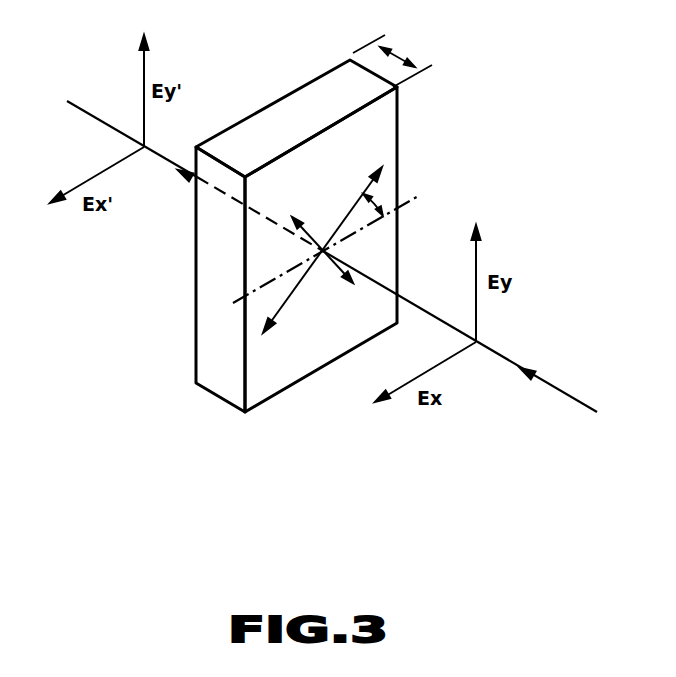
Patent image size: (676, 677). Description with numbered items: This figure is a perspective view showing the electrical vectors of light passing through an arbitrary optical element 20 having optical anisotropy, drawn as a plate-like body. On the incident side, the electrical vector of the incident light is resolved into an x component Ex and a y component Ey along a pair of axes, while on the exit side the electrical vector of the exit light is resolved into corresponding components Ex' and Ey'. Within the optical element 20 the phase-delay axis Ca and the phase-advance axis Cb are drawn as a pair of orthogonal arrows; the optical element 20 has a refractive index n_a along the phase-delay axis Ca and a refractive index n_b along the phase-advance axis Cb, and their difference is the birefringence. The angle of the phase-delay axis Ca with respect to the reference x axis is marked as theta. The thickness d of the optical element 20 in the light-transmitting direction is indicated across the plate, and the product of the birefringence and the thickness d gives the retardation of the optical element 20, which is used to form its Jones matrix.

The optical element 20 is at (222, 385).
The phase-delay axis Ca is at (347, 217).
The phase-advance axis Cb is at (330, 263).
The thickness d is at (392, 57).